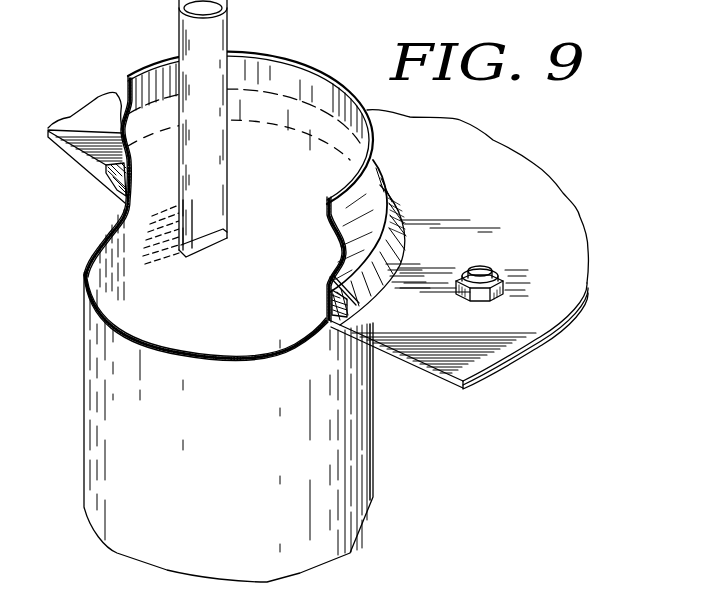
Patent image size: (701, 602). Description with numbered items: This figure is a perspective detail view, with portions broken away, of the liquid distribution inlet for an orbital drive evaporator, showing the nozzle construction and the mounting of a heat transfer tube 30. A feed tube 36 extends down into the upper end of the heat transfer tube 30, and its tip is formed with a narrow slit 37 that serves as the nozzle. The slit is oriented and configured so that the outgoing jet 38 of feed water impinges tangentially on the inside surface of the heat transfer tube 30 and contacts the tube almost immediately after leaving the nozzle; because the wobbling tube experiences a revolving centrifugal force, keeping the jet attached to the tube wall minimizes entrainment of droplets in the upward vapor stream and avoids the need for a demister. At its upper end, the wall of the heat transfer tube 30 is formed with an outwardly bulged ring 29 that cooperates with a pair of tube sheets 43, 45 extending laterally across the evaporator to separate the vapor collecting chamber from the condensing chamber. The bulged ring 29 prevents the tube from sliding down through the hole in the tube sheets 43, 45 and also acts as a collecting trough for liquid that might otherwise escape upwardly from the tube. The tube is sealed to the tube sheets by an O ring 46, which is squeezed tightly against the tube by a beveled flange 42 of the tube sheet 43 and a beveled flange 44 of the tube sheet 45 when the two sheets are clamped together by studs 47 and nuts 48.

The outwardly bulged ring 29 is at (118, 127).
The heat transfer tube 30 is at (88, 398).
The tube 36 is at (220, 30).
The narrow slit 37 is at (182, 213).
The outgoing jet 38 is at (160, 253).
The beveled flange 42 is at (400, 213).
The tube sheet 43 is at (446, 257).
The beveled flange 44 is at (363, 327).
The tube sheet 45 is at (410, 367).
The O ring 46 is at (110, 183).
The stud 47 is at (480, 267).
The nut 48 is at (503, 283).